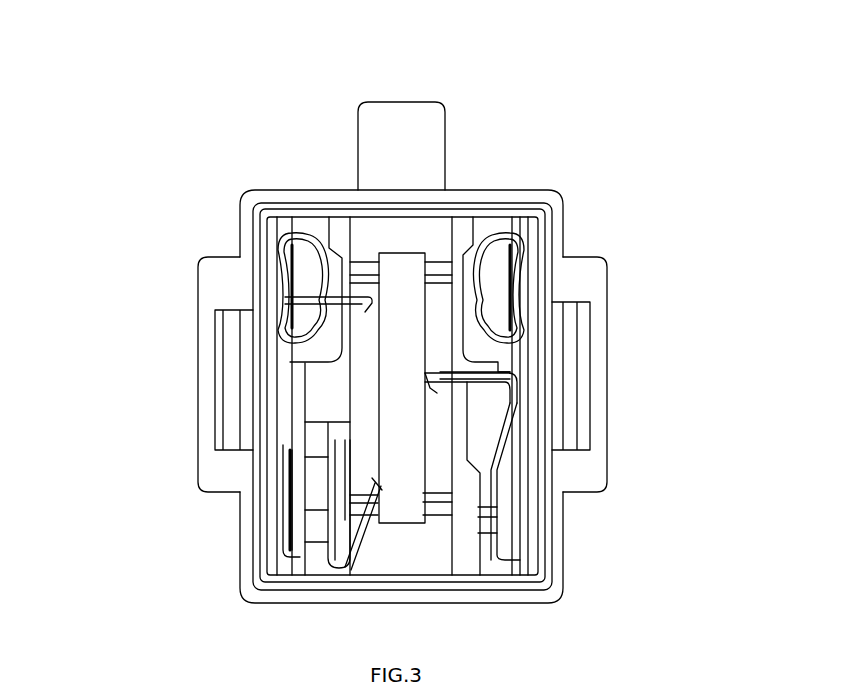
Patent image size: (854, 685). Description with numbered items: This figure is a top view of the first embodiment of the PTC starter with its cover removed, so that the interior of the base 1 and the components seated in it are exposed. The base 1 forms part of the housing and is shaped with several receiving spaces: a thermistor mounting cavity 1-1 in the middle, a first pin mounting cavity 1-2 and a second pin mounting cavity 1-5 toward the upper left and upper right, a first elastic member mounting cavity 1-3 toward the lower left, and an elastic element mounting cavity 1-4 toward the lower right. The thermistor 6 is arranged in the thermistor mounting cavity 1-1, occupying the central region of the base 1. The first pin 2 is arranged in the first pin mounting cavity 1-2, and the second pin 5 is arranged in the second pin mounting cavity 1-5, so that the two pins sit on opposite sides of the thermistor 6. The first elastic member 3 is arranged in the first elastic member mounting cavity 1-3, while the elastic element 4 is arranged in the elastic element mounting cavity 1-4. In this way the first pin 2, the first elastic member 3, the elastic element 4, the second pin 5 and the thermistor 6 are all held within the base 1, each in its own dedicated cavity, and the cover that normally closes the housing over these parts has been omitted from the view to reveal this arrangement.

The base 1 is at (230, 287).
The thermistor mounting cavity 1-1 is at (365, 388).
The first pin mounting cavity 1-2 is at (283, 268).
The first elastic member mounting cavity 1-3 is at (320, 480).
The elastic element mounting cavity 1-4 is at (483, 421).
The second pin mounting cavity 1-5 is at (493, 285).
The first pin 2 is at (283, 350).
The first elastic member 3 is at (330, 493).
The elastic element 4 is at (497, 520).
The second pin 5 is at (512, 358).
The thermistor 6 is at (400, 310).